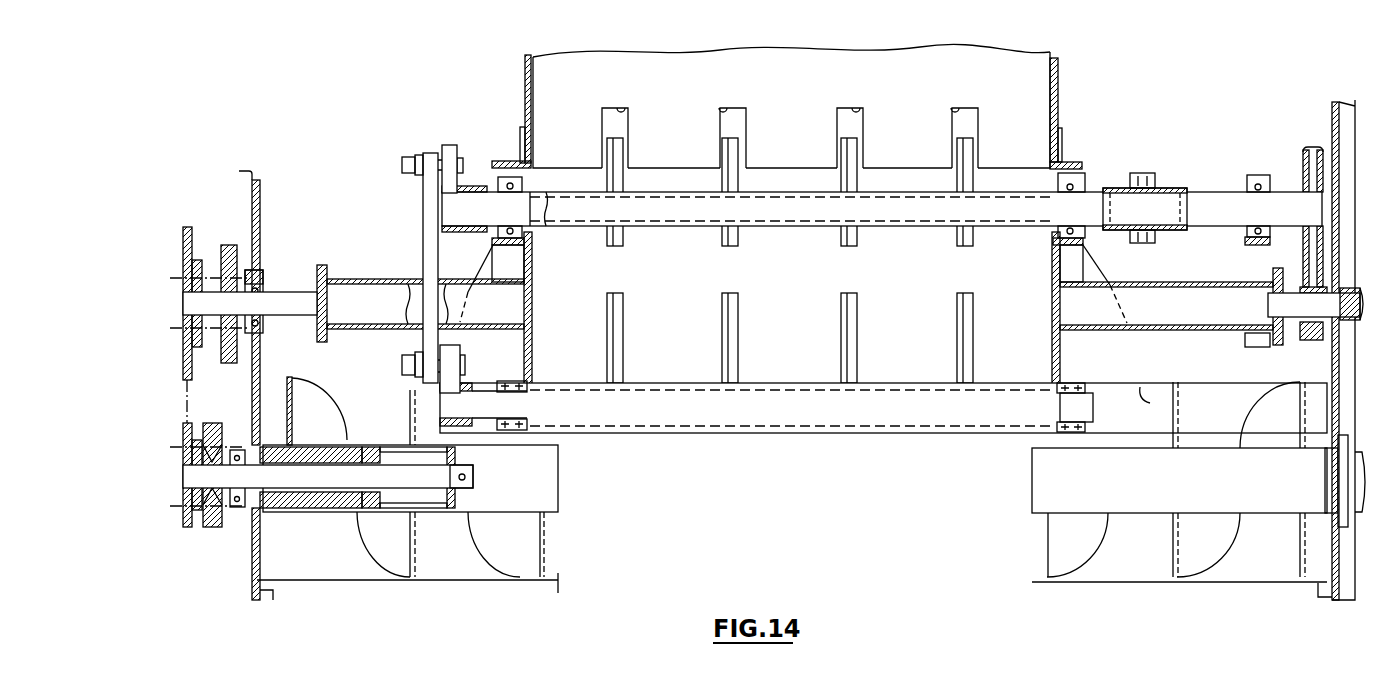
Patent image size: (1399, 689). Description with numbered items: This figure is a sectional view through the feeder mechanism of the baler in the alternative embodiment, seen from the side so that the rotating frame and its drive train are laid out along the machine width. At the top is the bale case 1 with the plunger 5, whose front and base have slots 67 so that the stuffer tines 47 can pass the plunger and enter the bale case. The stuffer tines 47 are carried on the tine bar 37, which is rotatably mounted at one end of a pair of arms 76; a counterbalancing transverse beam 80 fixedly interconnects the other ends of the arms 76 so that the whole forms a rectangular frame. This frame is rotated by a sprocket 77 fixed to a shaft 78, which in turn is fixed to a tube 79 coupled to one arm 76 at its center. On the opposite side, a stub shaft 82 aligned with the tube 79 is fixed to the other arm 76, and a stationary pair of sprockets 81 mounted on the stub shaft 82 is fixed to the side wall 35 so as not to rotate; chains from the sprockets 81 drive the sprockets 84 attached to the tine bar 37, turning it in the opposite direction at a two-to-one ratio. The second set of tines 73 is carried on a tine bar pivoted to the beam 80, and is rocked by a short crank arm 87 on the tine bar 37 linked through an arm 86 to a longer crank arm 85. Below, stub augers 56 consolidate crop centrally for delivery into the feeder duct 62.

The bale case 1 is at (522, 85).
The plunger 5 is at (809, 66).
The side wall 35 is at (249, 558).
The tine bar 37 is at (797, 228).
The stuffer tines 47 is at (722, 147).
The stub auger 56 is at (365, 556).
The feeder duct 62 is at (788, 549).
The slots 67 is at (723, 117).
The tines 73 is at (724, 327).
The arms 76 is at (531, 336).
The sprocket 77 is at (236, 250).
The shaft 78 is at (284, 293).
The tube 79 is at (362, 279).
The counterbalancing transverse beam 80 is at (838, 434).
The stationary sprockets 81 is at (1318, 337).
The stub shaft 82 is at (1356, 314).
The sprockets 84 is at (1305, 150).
The crank arm 85 is at (456, 348).
The arm 86 is at (427, 228).
The crank arm 87 is at (451, 147).